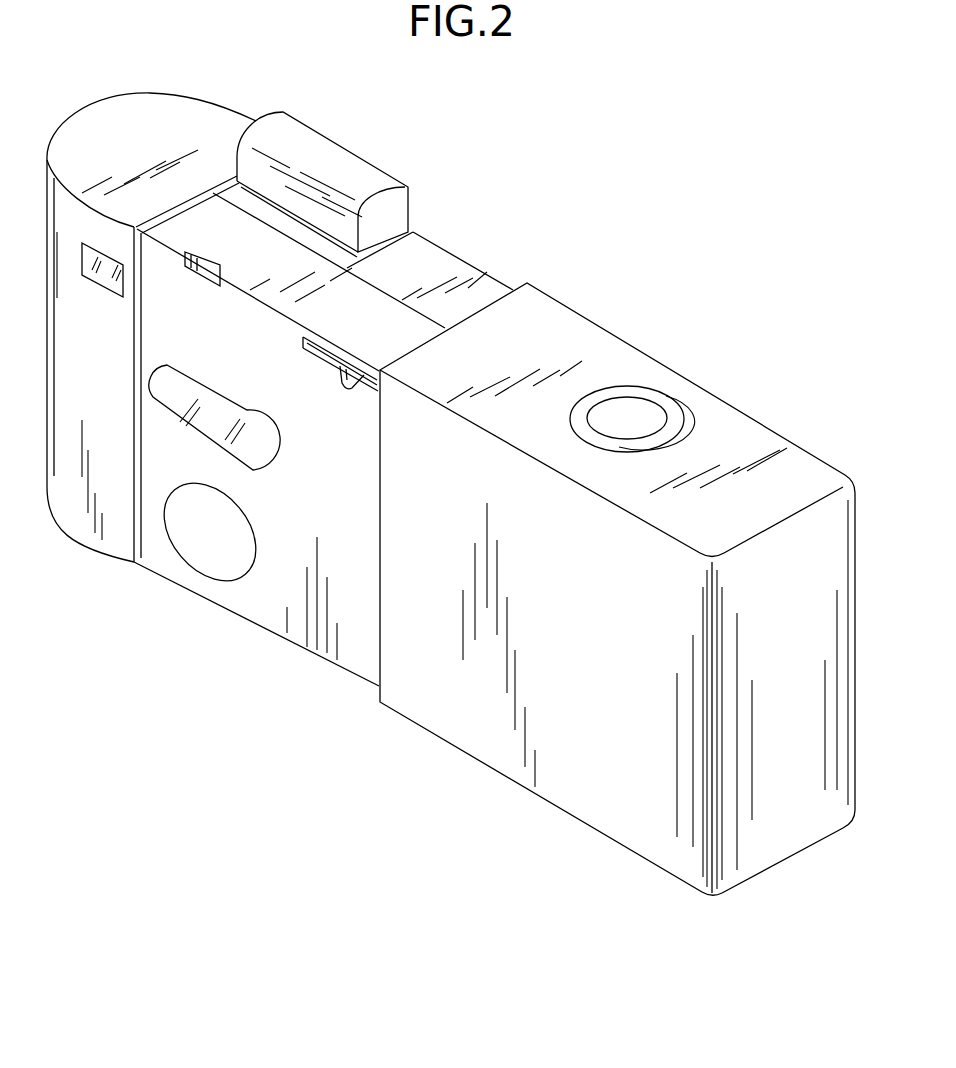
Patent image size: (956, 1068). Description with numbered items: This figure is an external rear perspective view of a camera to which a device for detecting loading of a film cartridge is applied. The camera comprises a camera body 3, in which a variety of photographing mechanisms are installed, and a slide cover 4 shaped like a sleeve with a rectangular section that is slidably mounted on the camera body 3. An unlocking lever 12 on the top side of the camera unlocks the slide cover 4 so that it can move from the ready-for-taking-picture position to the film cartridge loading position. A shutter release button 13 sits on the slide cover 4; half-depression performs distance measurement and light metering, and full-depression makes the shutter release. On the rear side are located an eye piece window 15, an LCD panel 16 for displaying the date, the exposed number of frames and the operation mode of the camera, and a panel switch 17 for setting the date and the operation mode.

The camera body 3 is at (437, 267).
The slide cover 4 is at (736, 437).
The unlocking lever 12 is at (191, 274).
The shutter release button 13 is at (627, 405).
The eye piece window 15 is at (103, 282).
The LCD panel 16 is at (256, 449).
The panel switch 17 is at (206, 548).